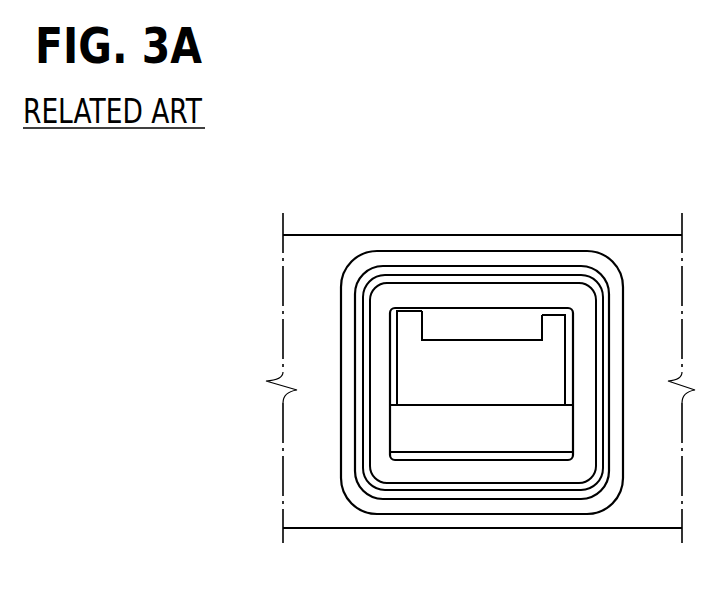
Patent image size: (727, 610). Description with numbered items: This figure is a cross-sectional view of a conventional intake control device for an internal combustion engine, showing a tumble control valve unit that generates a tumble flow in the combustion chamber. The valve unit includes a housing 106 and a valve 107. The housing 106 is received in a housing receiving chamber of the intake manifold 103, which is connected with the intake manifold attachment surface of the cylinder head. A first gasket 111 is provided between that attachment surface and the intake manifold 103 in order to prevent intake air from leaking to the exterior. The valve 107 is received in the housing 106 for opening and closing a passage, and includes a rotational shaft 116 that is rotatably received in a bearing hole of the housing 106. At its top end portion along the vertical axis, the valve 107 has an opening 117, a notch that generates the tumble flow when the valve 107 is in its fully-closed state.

The intake manifold 103 is at (628, 247).
The housing 106 is at (525, 477).
The valve 107 is at (412, 348).
The first gasket 111 is at (458, 257).
The rotational shaft 116 is at (448, 440).
The opening 117 is at (533, 327).